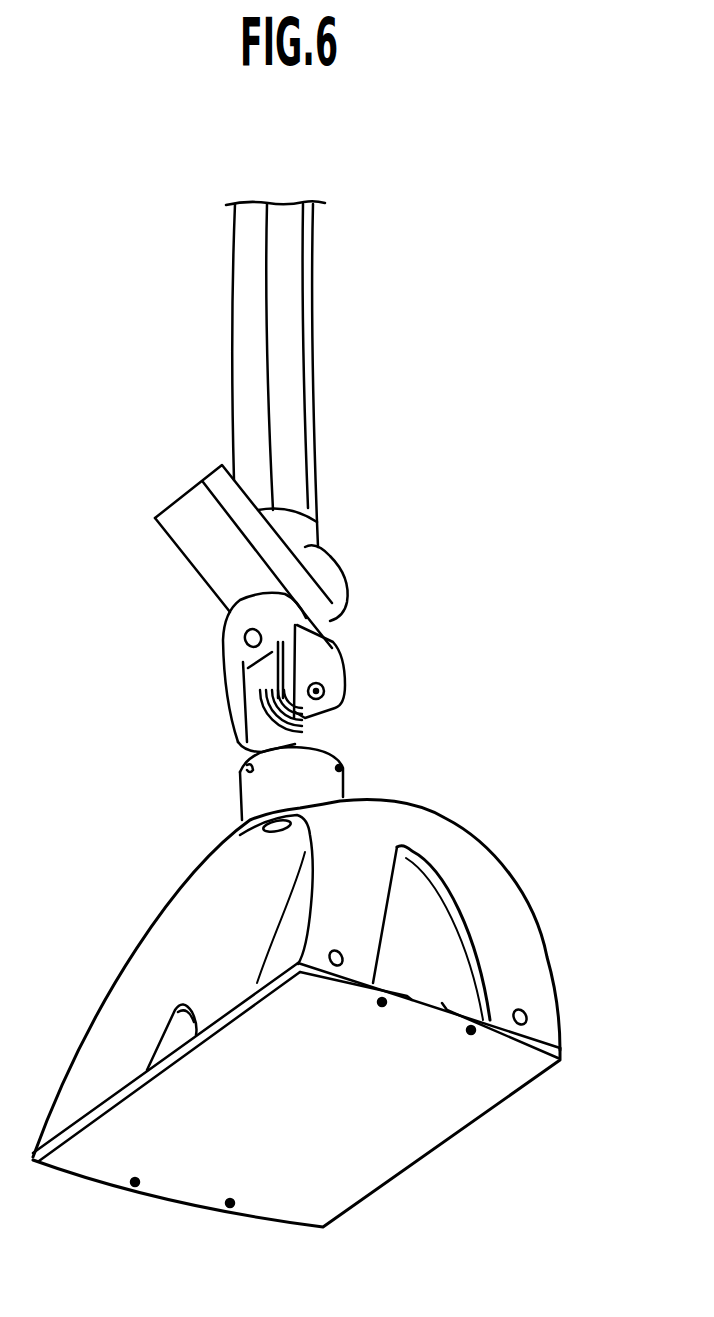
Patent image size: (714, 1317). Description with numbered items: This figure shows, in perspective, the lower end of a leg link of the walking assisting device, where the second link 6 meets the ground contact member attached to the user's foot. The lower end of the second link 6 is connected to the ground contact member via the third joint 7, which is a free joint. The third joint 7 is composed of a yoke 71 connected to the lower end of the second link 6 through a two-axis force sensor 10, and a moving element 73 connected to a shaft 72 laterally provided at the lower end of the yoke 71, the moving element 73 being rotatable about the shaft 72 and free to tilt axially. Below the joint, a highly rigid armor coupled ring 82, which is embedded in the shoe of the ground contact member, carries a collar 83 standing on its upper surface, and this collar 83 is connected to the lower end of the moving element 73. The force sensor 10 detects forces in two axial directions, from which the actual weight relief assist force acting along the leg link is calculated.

The second link 6 is at (290, 405).
The 2-axis force sensor 10 is at (340, 577).
The third joint 7 is at (380, 687).
The yoke 71 is at (332, 662).
The shaft 72 is at (333, 707).
The moving element 73 is at (244, 712).
The collar 83 is at (383, 780).
The coupled ring 82 is at (510, 905).